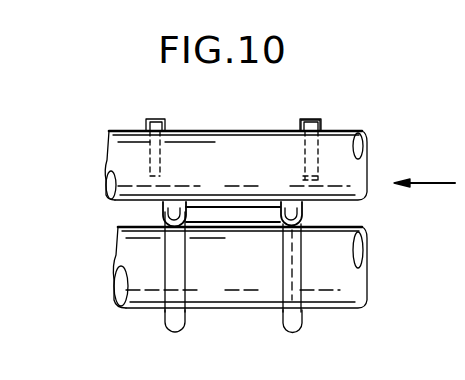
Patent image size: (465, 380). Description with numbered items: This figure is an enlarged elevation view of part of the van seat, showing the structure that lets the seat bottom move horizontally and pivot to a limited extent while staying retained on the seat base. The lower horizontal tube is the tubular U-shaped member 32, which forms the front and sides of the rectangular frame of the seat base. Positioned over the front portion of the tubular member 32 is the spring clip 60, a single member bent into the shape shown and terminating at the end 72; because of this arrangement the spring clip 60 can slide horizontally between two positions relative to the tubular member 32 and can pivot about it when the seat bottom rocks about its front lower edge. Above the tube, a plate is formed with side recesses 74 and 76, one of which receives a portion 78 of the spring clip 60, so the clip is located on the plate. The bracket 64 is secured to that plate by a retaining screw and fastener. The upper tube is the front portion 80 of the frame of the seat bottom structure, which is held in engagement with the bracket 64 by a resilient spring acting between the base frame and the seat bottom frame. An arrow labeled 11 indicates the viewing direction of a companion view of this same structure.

The viewing direction arrow 11 is at (425, 183).
The tubular U-shaped member 32 is at (342, 311).
The spring clip 60 is at (186, 326).
The bracket 64 is at (313, 119).
The end 72 is at (163, 324).
The side recess 74 is at (163, 210).
The side recess 76 is at (303, 214).
The portion of the spring clip 78 is at (290, 203).
The front portion of the frame 80 is at (125, 130).